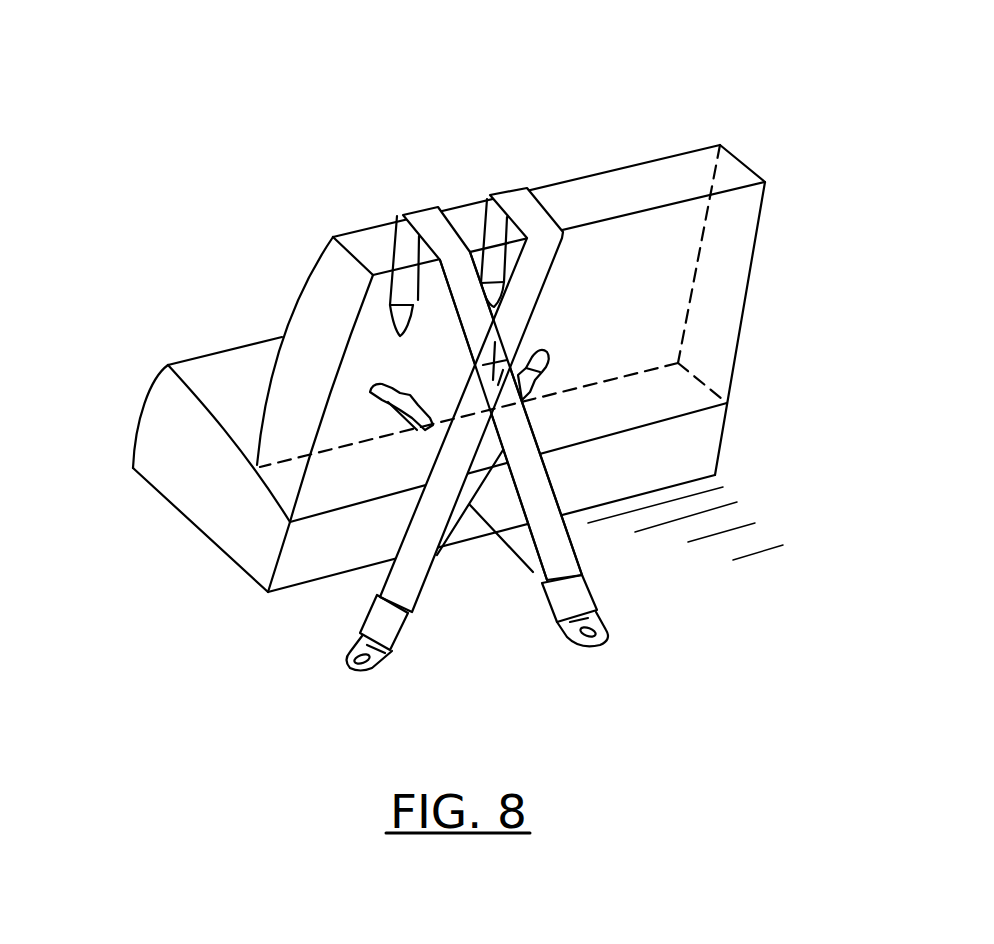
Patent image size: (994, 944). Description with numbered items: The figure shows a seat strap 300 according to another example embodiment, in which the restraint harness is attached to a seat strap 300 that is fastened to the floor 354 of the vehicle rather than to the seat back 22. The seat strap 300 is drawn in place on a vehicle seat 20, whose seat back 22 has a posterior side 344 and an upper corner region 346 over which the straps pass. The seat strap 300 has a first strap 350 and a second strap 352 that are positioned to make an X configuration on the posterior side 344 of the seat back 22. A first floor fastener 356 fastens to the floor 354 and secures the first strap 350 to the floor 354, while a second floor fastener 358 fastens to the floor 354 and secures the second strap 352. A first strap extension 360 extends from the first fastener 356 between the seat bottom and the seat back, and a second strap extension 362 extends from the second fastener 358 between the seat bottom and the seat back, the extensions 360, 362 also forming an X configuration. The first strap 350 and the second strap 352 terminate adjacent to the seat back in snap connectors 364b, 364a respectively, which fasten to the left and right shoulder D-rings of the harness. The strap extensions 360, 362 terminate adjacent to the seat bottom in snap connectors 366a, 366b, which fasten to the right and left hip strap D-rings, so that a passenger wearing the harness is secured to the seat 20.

The seat 20 is at (133, 413).
The seat back 22 is at (732, 167).
The seat strap 300 is at (393, 42).
The posterior side 344 is at (738, 263).
The seat back upper corner 346 is at (333, 235).
The first strap 350 is at (403, 216).
The second strap 352 is at (517, 192).
The floor 354 is at (737, 515).
The first floor fastener 356 is at (600, 643).
The second floor fastener 358 is at (357, 670).
The first strap extension 360 is at (522, 545).
The second strap extension 362 is at (437, 553).
The snap connector 364a is at (493, 290).
The snap connector 364b is at (397, 317).
The snap connector 366a is at (540, 358).
The snap connector 366b is at (387, 397).